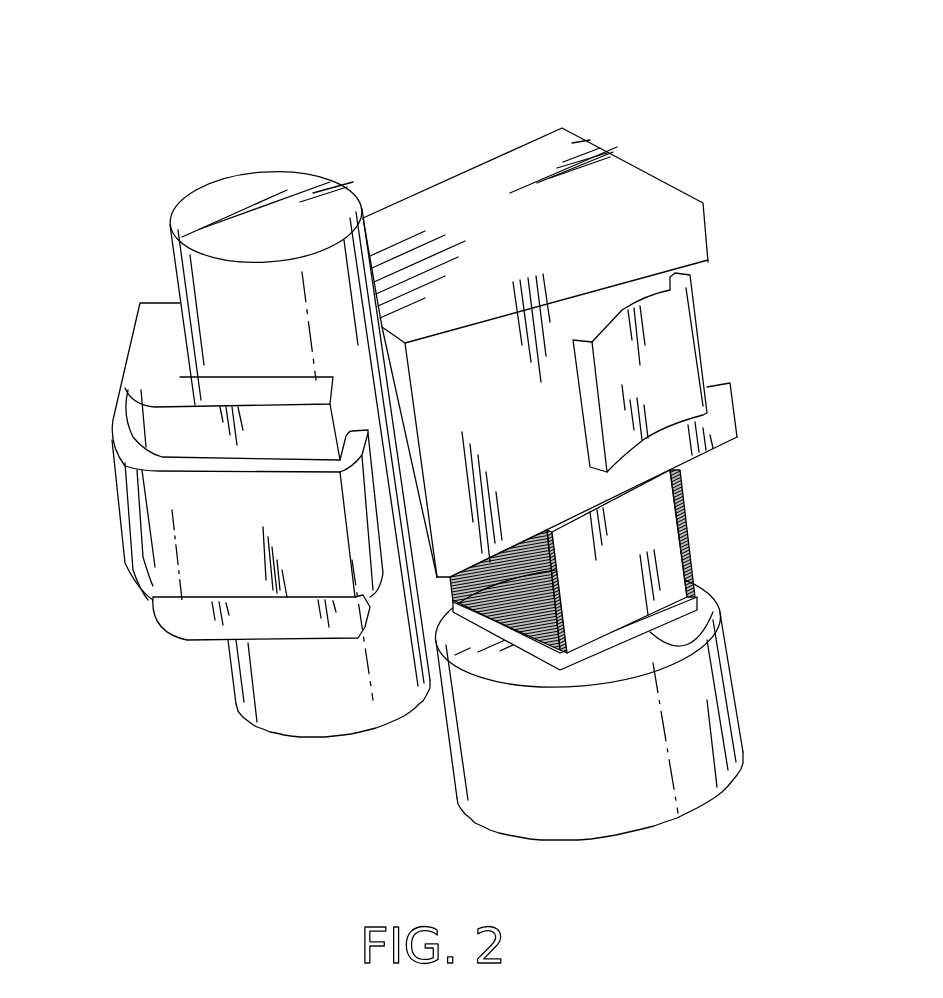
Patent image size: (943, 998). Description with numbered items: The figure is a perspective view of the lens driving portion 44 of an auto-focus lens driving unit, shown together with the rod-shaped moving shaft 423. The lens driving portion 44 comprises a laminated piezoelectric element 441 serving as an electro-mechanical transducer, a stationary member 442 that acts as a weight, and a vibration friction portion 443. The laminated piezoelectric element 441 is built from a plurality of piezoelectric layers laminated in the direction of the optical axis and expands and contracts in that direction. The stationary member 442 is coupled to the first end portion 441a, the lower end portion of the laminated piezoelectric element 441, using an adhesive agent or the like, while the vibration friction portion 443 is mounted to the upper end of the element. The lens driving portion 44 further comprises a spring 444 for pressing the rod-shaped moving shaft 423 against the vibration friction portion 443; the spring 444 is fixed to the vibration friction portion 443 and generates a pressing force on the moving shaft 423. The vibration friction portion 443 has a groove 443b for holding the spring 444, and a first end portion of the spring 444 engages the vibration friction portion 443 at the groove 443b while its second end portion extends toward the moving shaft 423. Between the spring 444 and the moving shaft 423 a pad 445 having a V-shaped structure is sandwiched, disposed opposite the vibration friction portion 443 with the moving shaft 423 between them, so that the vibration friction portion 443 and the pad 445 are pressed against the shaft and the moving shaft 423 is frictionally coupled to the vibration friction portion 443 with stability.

The lens driving portion 44 is at (495, 88).
The rod-shaped moving shaft 423 is at (190, 271).
The laminated piezoelectric element 441 is at (650, 508).
The first end portion 441a is at (710, 636).
The stationary member 442 is at (720, 703).
The vibration friction portion 443 is at (612, 177).
The groove 443b is at (717, 378).
The spring 444 is at (683, 328).
The pad 445 is at (188, 636).